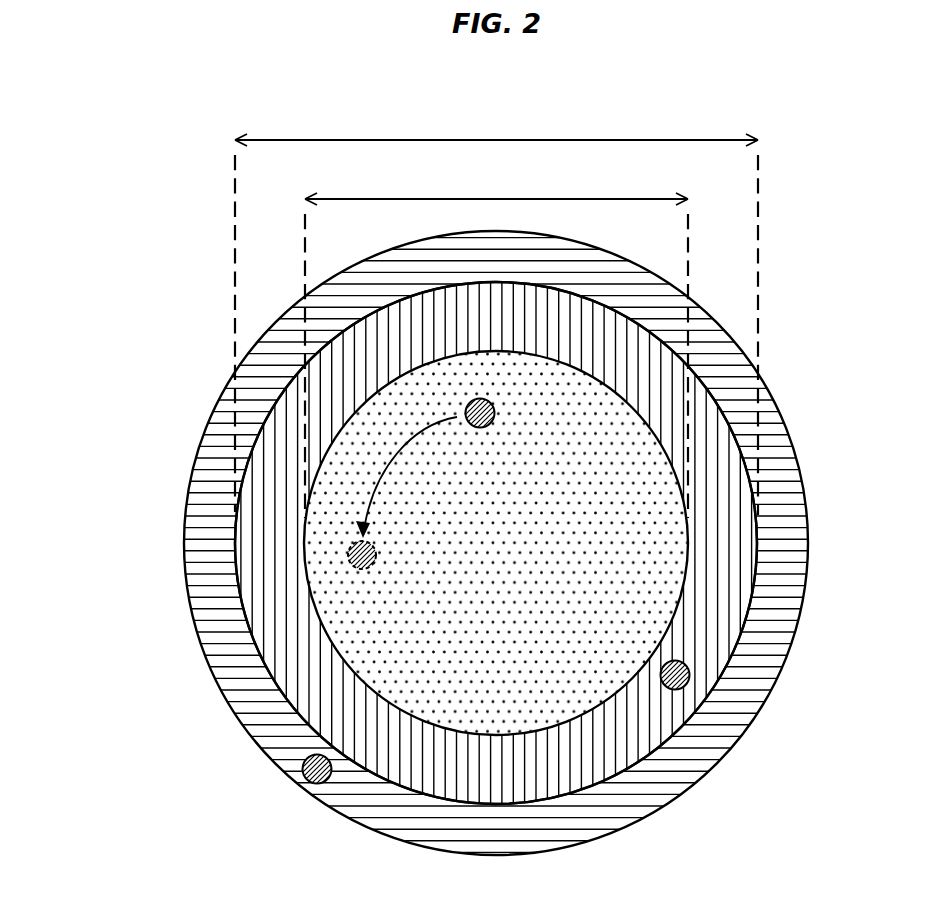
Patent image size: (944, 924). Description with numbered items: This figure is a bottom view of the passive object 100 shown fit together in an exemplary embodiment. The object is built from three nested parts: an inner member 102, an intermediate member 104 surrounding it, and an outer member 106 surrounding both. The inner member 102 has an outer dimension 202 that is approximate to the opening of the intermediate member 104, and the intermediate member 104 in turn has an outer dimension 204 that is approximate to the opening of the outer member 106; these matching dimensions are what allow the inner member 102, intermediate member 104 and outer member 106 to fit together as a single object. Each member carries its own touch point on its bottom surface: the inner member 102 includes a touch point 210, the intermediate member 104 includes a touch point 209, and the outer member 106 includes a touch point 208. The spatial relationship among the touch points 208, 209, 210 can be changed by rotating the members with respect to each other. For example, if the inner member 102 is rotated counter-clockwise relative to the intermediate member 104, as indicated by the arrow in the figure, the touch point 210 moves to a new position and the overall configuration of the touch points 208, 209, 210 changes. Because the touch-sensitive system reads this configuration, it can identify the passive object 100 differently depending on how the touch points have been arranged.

The passive object 100 is at (453, 540).
The inner member 102 is at (542, 707).
The intermediate member 104 is at (630, 737).
The outer member 106 is at (727, 733).
The outer dimension 202 is at (553, 198).
The outer dimension 204 is at (635, 139).
The touch point 208 is at (306, 780).
The touch point 209 is at (690, 680).
The touch point 210 is at (470, 402).